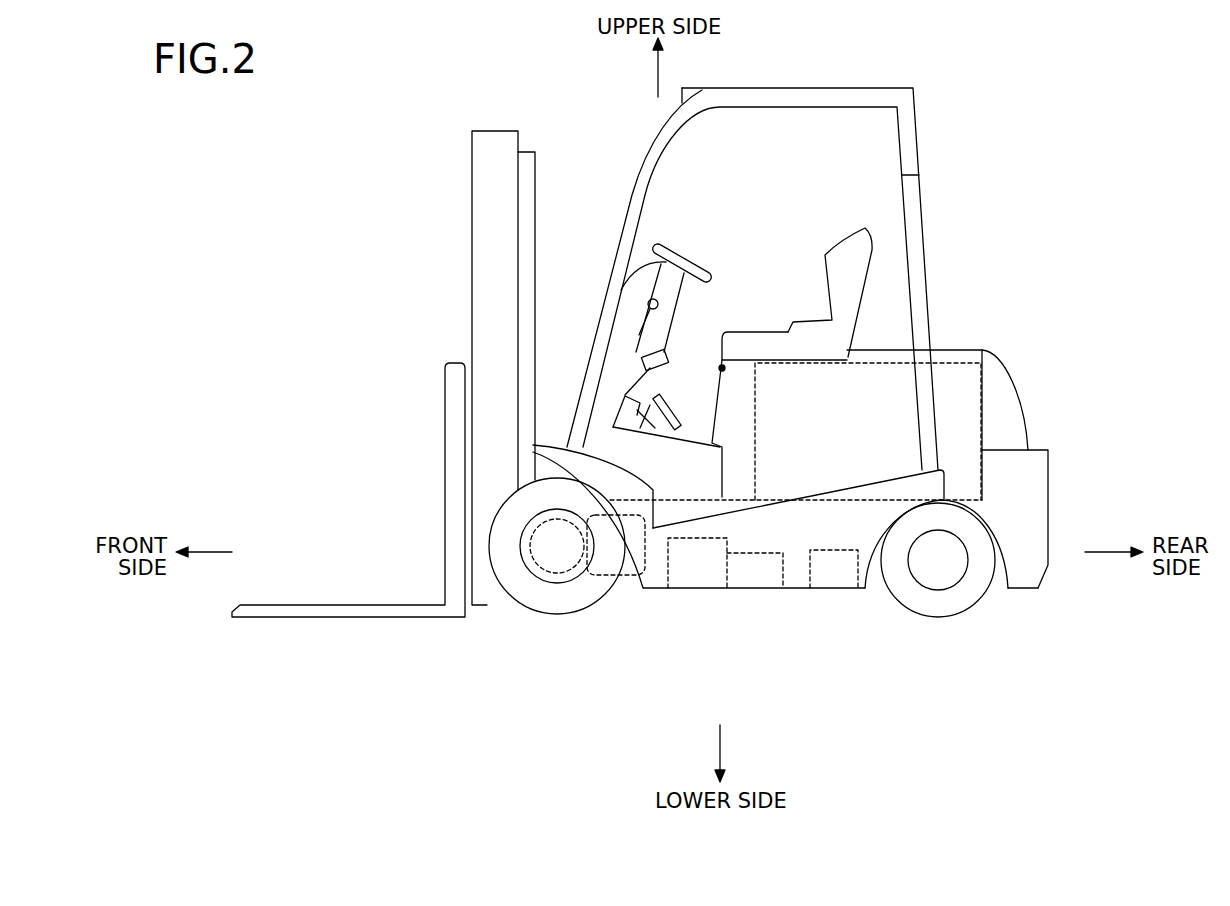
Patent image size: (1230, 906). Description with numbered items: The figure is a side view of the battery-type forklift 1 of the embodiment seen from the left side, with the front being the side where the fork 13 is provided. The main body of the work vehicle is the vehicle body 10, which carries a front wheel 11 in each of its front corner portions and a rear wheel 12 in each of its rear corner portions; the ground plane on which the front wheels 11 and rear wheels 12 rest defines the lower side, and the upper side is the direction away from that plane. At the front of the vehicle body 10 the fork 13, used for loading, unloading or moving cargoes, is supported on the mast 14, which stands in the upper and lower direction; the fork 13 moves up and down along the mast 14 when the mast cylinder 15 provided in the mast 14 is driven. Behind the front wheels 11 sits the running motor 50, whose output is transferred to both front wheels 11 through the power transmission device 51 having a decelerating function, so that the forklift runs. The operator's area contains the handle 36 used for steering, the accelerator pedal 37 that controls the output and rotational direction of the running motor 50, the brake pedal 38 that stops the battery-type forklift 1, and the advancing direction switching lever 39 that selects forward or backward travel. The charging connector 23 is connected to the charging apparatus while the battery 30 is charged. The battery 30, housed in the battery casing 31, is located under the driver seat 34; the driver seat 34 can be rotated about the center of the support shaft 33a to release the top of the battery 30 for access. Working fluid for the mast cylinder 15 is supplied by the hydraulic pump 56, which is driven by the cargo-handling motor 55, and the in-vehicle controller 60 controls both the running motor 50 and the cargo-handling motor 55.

The battery-type forklift 1 is at (371, 105).
The vehicle body 10 is at (650, 593).
The front wheel 11 is at (528, 590).
The rear wheel 12 is at (943, 600).
The fork 13 is at (300, 604).
The mast 14 is at (472, 195).
The mast cylinder 15 is at (529, 193).
The charging connector 23 is at (663, 352).
The battery 30 is at (997, 366).
The battery casing 31 is at (845, 416).
The support shaft 33a is at (724, 364).
The driver seat 34 is at (865, 253).
The handle 36 is at (670, 245).
The accelerator pedal 37 is at (636, 376).
The brake pedal 38 is at (622, 395).
The advancing direction switching lever 39 is at (640, 303).
The running motor 50 is at (627, 578).
The power transmission device 51 is at (560, 560).
The cargo-handling motor 55 is at (757, 582).
The hydraulic pump 56 is at (693, 582).
The in-vehicle controller 60 is at (827, 585).